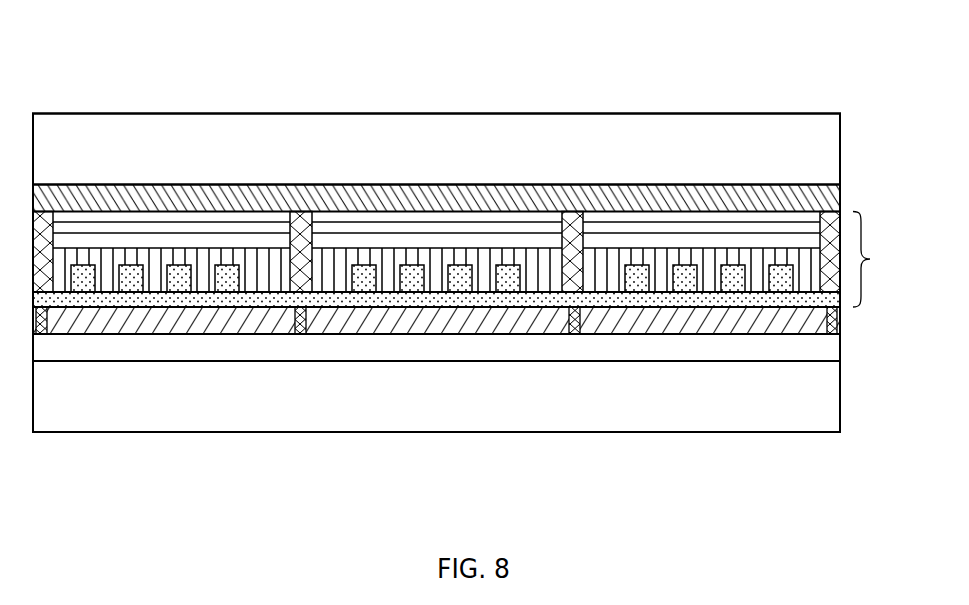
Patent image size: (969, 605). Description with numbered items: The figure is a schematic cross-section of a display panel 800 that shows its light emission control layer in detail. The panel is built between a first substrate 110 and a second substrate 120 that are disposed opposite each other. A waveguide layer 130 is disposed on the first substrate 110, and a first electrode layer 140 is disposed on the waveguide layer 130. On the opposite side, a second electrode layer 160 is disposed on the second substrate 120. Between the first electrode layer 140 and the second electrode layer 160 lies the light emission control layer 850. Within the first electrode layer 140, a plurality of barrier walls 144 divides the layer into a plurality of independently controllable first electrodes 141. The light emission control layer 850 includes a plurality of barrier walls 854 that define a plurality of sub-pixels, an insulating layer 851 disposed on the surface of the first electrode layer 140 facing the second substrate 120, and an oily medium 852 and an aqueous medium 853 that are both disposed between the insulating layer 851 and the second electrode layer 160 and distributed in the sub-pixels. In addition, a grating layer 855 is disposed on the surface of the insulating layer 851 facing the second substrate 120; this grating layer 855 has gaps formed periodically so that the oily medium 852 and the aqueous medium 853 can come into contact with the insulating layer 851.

The display panel 800 is at (53, 36).
The second substrate 120 is at (168, 142).
The second electrode layer 160 is at (322, 193).
The first substrate 110 is at (147, 401).
The waveguide layer 130 is at (260, 350).
The first electrode layer 140 is at (383, 322).
The first electrodes 141 is at (665, 322).
The barrier walls 144 is at (575, 322).
The light emission control layer 850 is at (885, 260).
The insulating layer 851 is at (753, 302).
The oily medium 852 is at (600, 258).
The aqueous medium 853 is at (697, 232).
The barrier walls 854 is at (570, 220).
The grating layer 855 is at (455, 283).